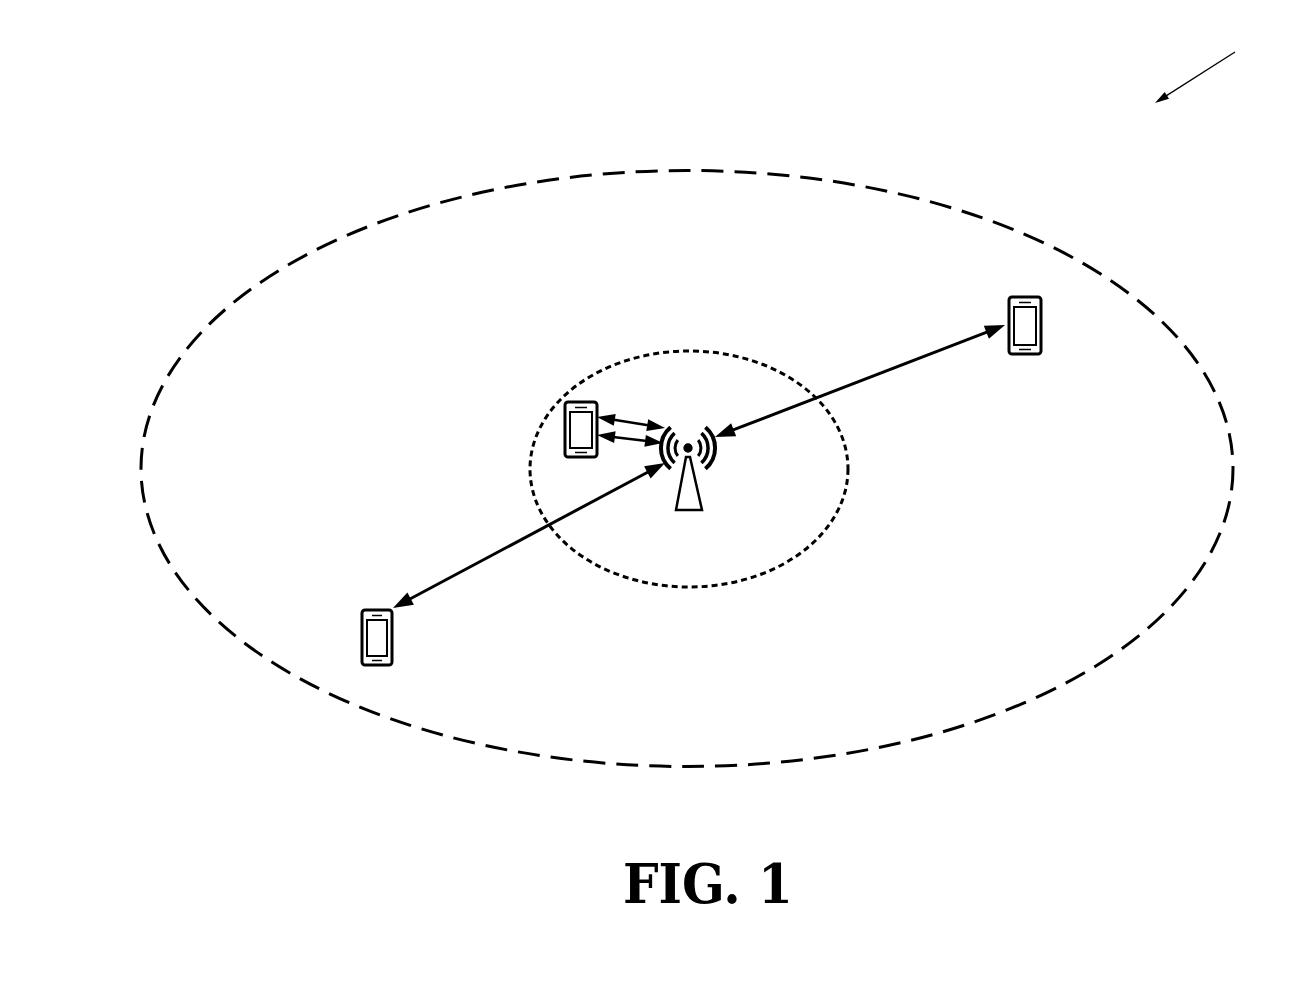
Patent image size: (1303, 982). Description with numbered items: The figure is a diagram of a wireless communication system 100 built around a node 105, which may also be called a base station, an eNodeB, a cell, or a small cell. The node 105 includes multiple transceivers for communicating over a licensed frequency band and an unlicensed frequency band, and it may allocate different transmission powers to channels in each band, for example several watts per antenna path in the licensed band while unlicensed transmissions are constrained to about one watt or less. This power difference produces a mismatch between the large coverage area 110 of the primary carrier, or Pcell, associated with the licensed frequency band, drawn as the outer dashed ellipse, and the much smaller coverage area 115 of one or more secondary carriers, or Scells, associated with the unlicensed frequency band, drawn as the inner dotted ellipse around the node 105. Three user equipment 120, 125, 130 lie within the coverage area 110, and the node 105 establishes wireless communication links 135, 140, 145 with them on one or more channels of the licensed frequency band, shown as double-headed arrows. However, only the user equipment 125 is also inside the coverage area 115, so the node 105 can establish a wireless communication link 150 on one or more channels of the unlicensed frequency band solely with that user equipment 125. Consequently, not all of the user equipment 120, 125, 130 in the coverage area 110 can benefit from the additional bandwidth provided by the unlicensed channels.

The wireless communication system 100 is at (1235, 52).
The node 105 is at (688, 510).
The coverage area of the primary carrier 110 is at (253, 287).
The coverage area of the secondary carrier 115 is at (692, 352).
The user equipment 120 is at (375, 667).
The user equipment 125 is at (560, 427).
The user equipment 130 is at (1027, 355).
The wireless communication link 135 is at (490, 557).
The wireless communication link 140 is at (630, 418).
The wireless communication link 145 is at (865, 385).
The wireless communication link 150 is at (625, 438).